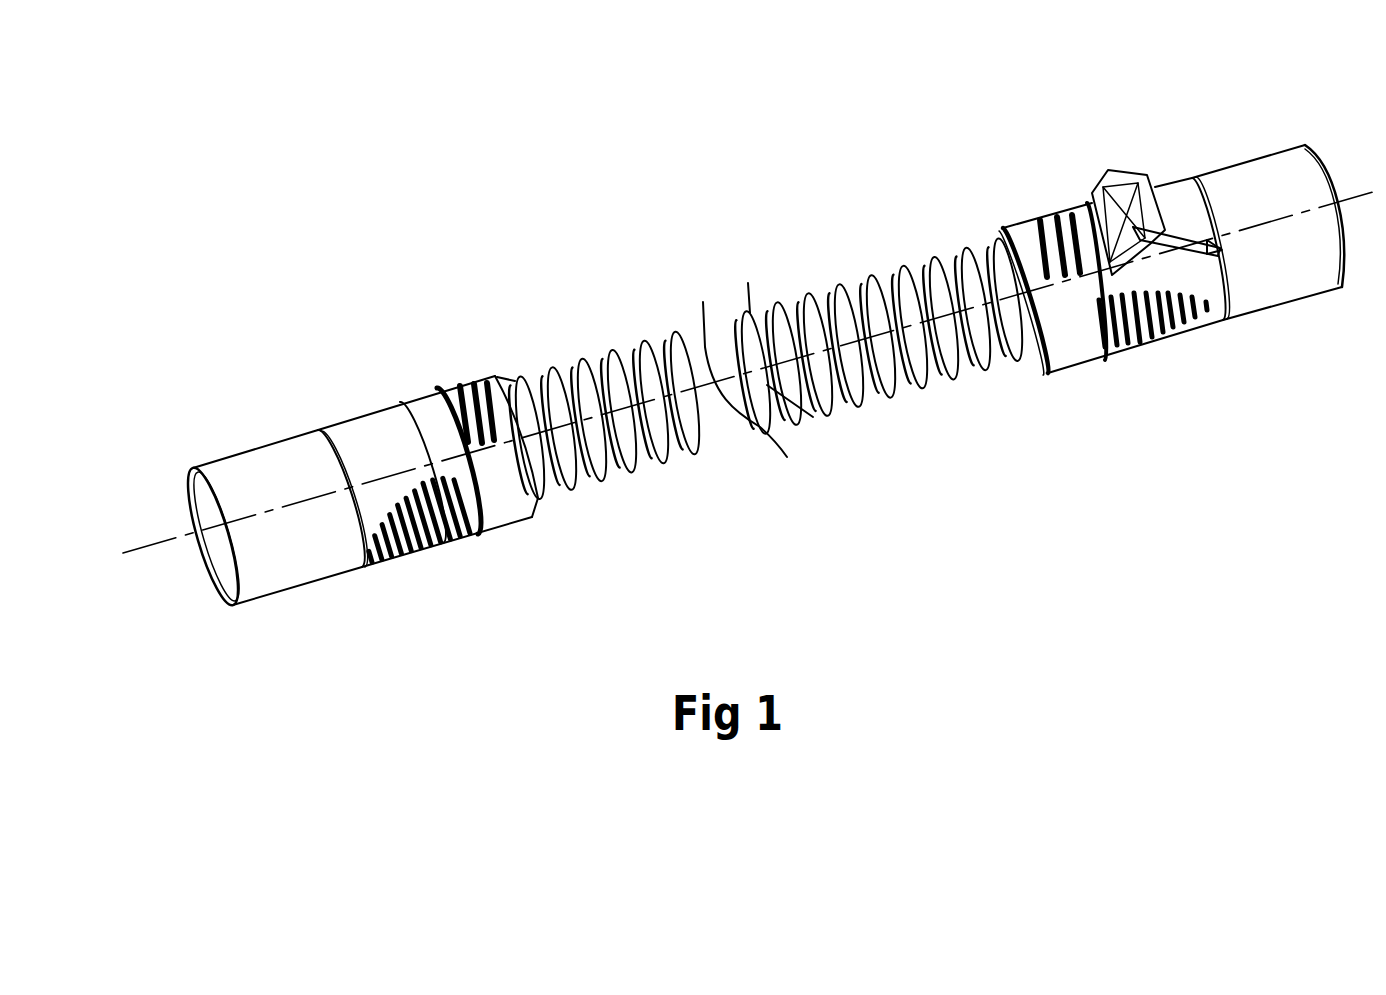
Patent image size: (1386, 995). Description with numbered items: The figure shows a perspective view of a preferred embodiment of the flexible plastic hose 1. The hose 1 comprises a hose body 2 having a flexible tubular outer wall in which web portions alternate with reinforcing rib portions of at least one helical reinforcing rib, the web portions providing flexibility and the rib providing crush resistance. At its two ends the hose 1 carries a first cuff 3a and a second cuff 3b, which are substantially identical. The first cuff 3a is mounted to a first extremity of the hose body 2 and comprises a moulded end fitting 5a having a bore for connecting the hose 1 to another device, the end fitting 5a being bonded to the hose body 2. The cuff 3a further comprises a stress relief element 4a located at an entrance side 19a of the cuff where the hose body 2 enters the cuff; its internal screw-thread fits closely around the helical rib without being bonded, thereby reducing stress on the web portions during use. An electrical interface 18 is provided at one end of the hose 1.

The hose 1 is at (986, 633).
The hose body 2 is at (750, 305).
The first cuff 3a is at (373, 508).
The second cuff 3b is at (1182, 264).
The stress relief element 4a is at (431, 425).
The end fitting 5a is at (293, 463).
The electrical interface 18 is at (1157, 170).
The entrance side 19a is at (563, 531).